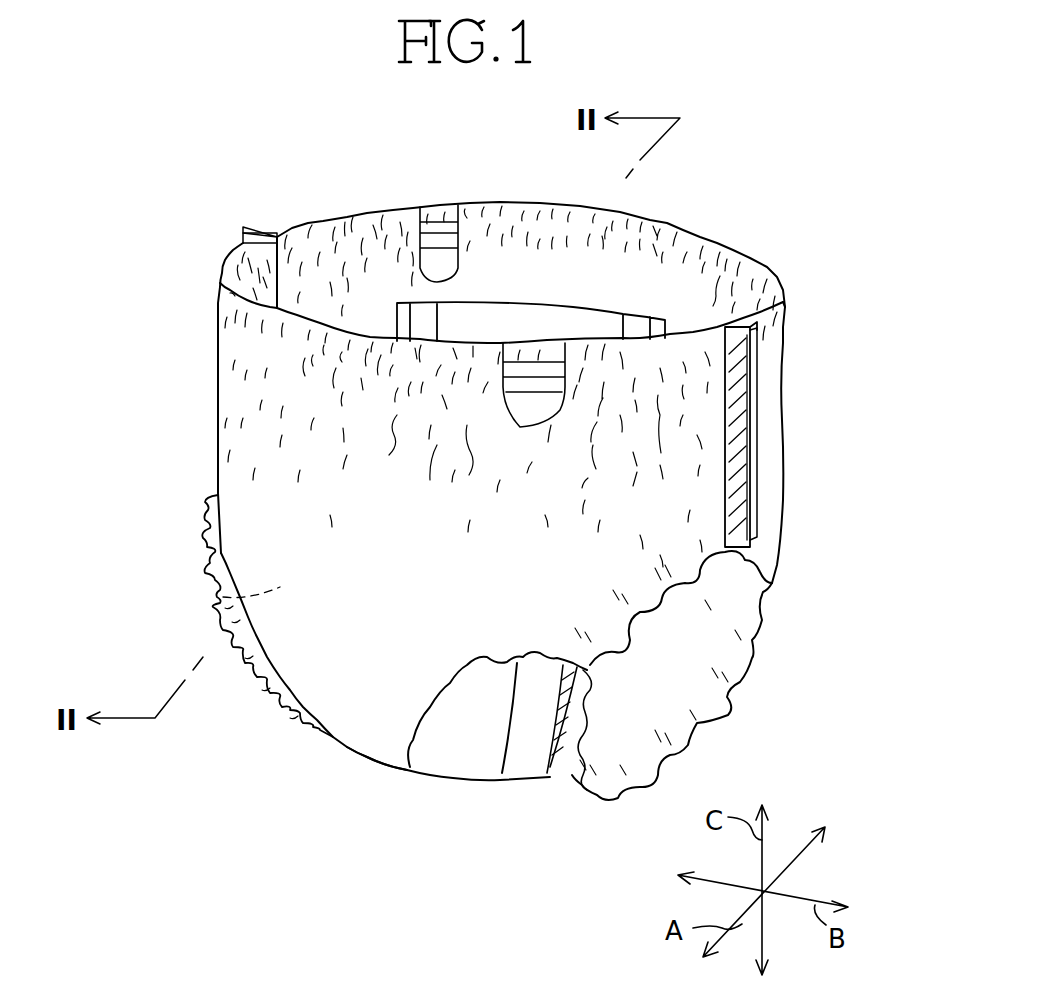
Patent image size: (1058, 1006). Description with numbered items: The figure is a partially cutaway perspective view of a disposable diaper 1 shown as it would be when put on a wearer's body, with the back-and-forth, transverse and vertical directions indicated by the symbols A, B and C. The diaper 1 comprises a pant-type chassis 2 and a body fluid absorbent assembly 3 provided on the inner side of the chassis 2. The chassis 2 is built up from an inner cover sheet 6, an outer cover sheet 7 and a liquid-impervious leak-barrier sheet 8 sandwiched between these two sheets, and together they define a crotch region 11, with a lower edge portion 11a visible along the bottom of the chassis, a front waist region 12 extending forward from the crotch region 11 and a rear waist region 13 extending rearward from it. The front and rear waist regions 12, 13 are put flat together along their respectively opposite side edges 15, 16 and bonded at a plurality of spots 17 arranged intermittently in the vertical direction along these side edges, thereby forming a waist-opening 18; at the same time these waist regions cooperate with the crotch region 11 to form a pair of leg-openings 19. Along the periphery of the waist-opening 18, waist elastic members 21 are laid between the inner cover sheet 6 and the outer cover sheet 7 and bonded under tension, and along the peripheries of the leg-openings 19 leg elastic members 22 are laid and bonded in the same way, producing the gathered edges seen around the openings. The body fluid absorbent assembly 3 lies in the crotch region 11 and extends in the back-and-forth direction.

The diaper 1 is at (801, 116).
The pant-type chassis 2 is at (702, 226).
The body fluid absorbent assembly 3 is at (588, 301).
The inner cover sheet 6 is at (527, 767).
The outer cover sheet 7 is at (288, 660).
The liquid-impervious leak-barrier sheet 8 is at (452, 767).
The crotch region 11 is at (372, 747).
The lower edge portion 11a is at (395, 763).
The front waist region 12 is at (253, 383).
The rear waist region 13 is at (537, 210).
The side edge 15 is at (243, 240).
The side edge 16 is at (277, 237).
The bonding spots 17 is at (737, 430).
The waist-opening 18 is at (370, 243).
The leg-openings 19 is at (223, 597).
The waist elastic members 21 is at (434, 245).
The leg elastic members 22 is at (568, 740).